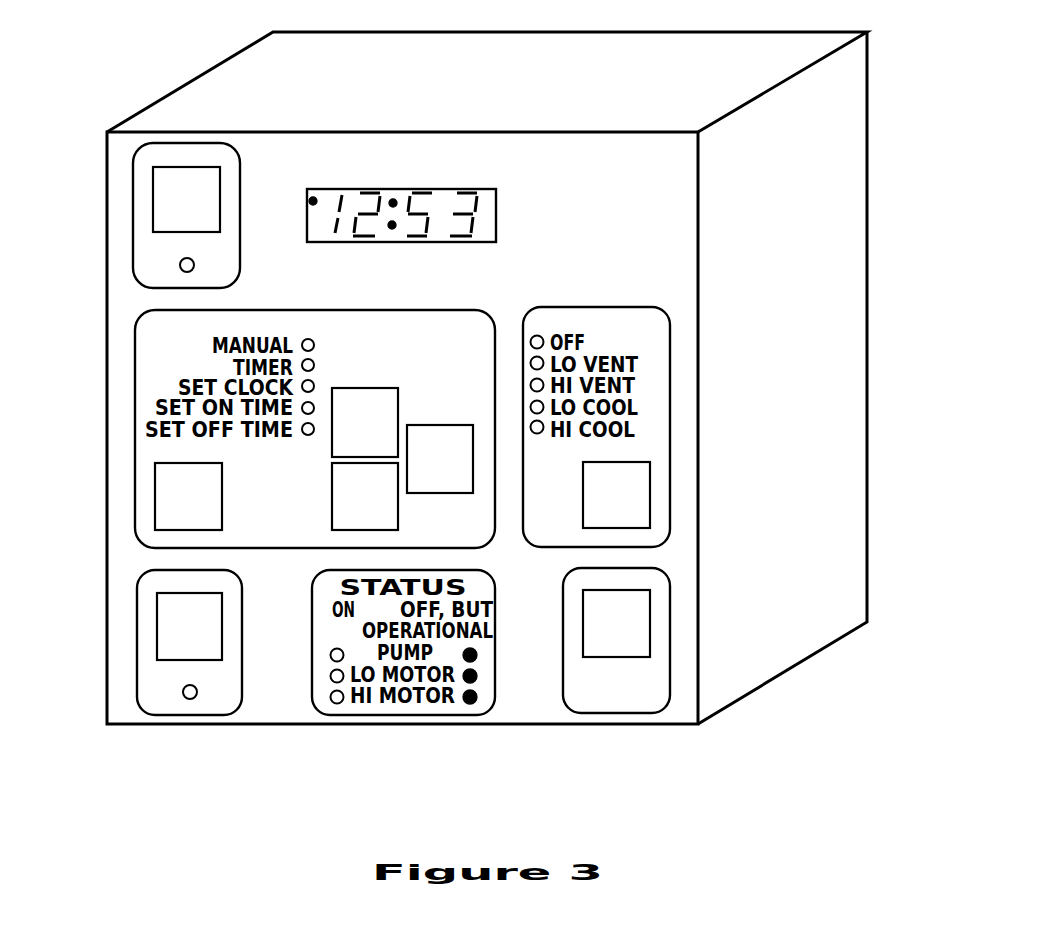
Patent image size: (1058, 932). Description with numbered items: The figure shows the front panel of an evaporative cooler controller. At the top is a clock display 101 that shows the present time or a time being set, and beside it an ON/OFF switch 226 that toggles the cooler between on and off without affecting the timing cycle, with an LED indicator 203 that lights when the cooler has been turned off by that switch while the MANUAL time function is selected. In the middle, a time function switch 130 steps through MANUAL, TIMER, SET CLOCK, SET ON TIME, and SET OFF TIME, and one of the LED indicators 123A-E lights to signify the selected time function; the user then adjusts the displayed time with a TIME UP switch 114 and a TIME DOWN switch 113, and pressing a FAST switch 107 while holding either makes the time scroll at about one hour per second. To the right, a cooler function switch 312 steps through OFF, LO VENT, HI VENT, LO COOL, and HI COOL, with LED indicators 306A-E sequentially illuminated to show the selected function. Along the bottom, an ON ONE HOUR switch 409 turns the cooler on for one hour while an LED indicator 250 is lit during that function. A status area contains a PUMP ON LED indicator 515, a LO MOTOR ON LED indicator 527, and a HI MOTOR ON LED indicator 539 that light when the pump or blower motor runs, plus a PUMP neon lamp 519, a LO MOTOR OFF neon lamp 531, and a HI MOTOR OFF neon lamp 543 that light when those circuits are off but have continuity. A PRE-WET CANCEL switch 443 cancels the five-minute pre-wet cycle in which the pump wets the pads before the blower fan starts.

The clock display 101 is at (403, 189).
The ON/OFF switch 226 is at (153, 222).
The LED indicator 203 is at (180, 265).
The LED indicators 306A-E is at (530, 407).
The LED indicators 123A-E is at (323, 408).
The TIME UP switch 114 is at (398, 395).
The TIME DOWN switch 113 is at (332, 518).
The FAST switch 107 is at (463, 493).
The time function switch 130 is at (222, 470).
The cooler function switch 312 is at (650, 520).
The ON 1 HOUR switch 409 is at (157, 652).
The LED indicator 250 is at (183, 692).
The PUMP ON LED indicator 515 is at (331, 658).
The LO MOTOR ON LED indicator 527 is at (331, 679).
The HI MOTOR ON LED indicator 539 is at (331, 700).
The PUMP neon lamp 519 is at (477, 658).
The LO MOTOR OFF neon lamp 531 is at (477, 680).
The HI MOTOR OFF neon lamp 543 is at (477, 700).
The PRE-WET CANCEL switch 443 is at (650, 650).